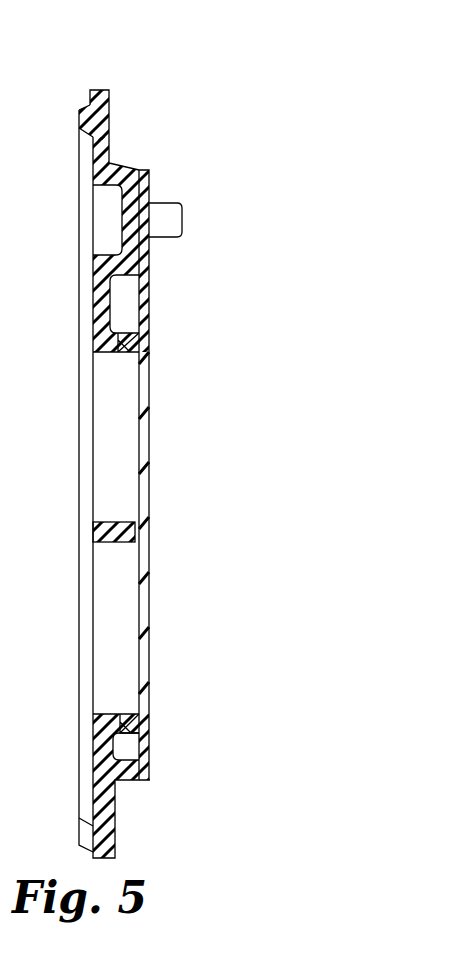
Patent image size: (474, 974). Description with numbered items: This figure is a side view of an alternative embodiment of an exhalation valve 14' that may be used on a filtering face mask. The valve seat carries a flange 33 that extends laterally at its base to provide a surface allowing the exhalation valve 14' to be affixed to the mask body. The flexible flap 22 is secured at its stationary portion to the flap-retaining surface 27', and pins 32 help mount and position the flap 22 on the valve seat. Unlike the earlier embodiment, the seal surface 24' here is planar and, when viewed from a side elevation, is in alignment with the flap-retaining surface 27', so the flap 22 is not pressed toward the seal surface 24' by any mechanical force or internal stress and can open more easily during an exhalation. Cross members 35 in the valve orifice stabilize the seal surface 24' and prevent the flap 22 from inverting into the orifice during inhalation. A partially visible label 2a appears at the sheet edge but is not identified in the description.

The exhalation valve 14' is at (198, 465).
The flange 33 is at (110, 128).
The flap-retaining surface 27' is at (155, 245).
The seal surface 24' is at (175, 528).
The flexible flap 22 is at (145, 487).
The pins 32 is at (178, 220).
The cross members 35 is at (120, 541).
The partial numeral (cut off at sheet edge) 2a is at (15, 83).